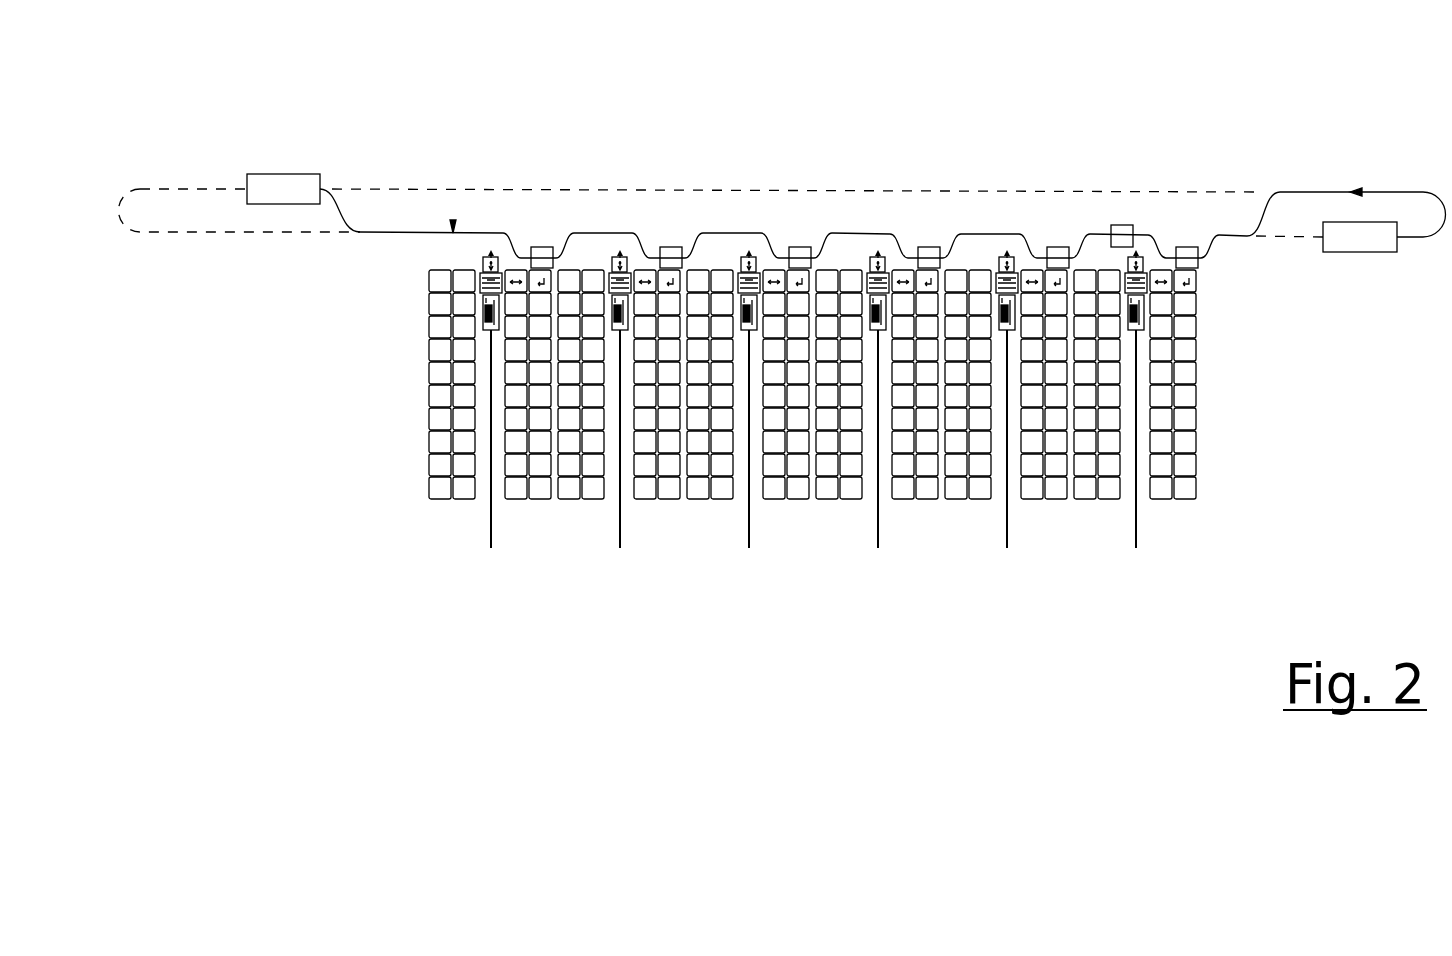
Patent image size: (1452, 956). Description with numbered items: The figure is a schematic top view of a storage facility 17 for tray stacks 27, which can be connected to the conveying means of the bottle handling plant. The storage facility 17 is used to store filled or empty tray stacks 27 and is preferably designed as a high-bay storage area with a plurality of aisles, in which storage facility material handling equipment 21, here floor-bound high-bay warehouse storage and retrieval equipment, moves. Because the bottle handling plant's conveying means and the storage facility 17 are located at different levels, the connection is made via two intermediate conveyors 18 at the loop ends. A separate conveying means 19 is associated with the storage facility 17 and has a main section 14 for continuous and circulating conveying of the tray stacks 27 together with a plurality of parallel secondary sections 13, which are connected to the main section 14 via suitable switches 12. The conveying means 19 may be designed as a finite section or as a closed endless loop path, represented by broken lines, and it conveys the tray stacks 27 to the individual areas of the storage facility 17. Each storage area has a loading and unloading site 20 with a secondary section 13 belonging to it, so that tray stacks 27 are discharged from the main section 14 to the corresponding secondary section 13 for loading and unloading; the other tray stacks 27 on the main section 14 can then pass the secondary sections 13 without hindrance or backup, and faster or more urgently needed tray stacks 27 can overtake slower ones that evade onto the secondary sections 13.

The switch 12 is at (776, 243).
The secondary section 13 is at (672, 256).
The main section 14 is at (568, 233).
The storage facility 17 is at (427, 373).
The intermediate conveyor 18 is at (297, 190).
The conveying means 19 is at (453, 222).
The loading and unloading site 20 is at (926, 258).
The storage facility material handling equipment 21 is at (480, 277).
The tray stack 27 is at (1120, 226).